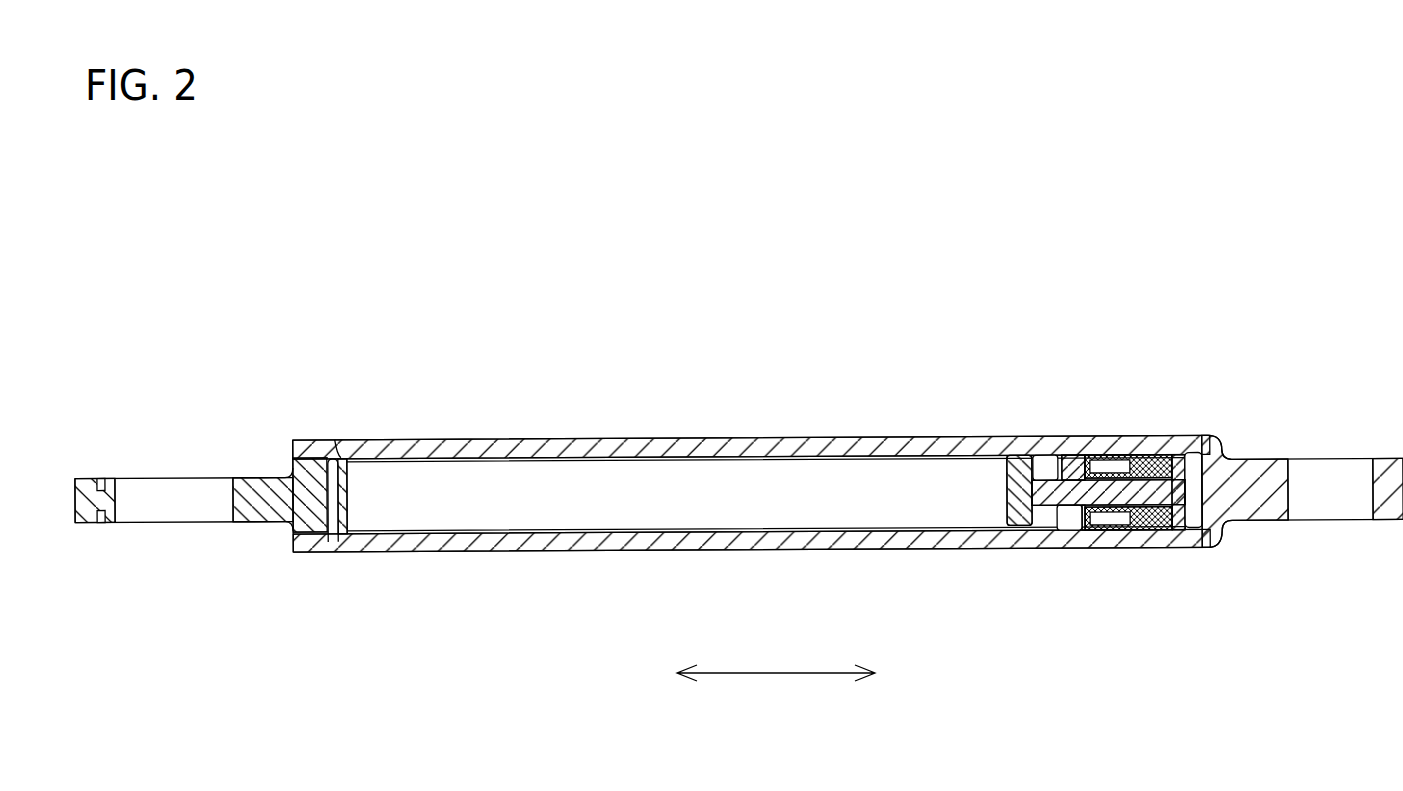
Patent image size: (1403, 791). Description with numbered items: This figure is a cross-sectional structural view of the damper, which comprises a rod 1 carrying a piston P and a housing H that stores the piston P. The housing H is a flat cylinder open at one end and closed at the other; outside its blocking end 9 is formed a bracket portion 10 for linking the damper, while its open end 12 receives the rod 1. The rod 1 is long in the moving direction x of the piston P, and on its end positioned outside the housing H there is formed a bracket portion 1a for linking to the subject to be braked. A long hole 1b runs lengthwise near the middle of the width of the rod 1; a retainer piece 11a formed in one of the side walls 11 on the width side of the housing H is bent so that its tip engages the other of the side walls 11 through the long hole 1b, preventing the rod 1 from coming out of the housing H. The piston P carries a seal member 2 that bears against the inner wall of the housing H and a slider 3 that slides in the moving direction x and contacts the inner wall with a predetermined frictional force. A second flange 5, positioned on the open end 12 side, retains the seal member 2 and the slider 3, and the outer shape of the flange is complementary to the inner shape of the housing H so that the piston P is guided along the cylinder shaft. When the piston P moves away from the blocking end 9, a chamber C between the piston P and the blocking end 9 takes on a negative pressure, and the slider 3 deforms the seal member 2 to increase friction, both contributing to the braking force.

The rod 1 is at (573, 476).
The bracket portion 1a is at (185, 507).
The long hole 1b is at (648, 459).
The seal member 2 is at (1161, 528).
The slider 3 is at (1096, 528).
The second flange 5 is at (1068, 456).
The blocking end 9 is at (1238, 441).
The bracket portion 10 is at (1343, 500).
The side walls 11 is at (730, 439).
The retainer piece 11a is at (349, 492).
The open end 12 is at (280, 553).
The chamber C is at (1195, 528).
The housing H is at (595, 535).
The piston P is at (1181, 452).
The moving direction x is at (800, 676).